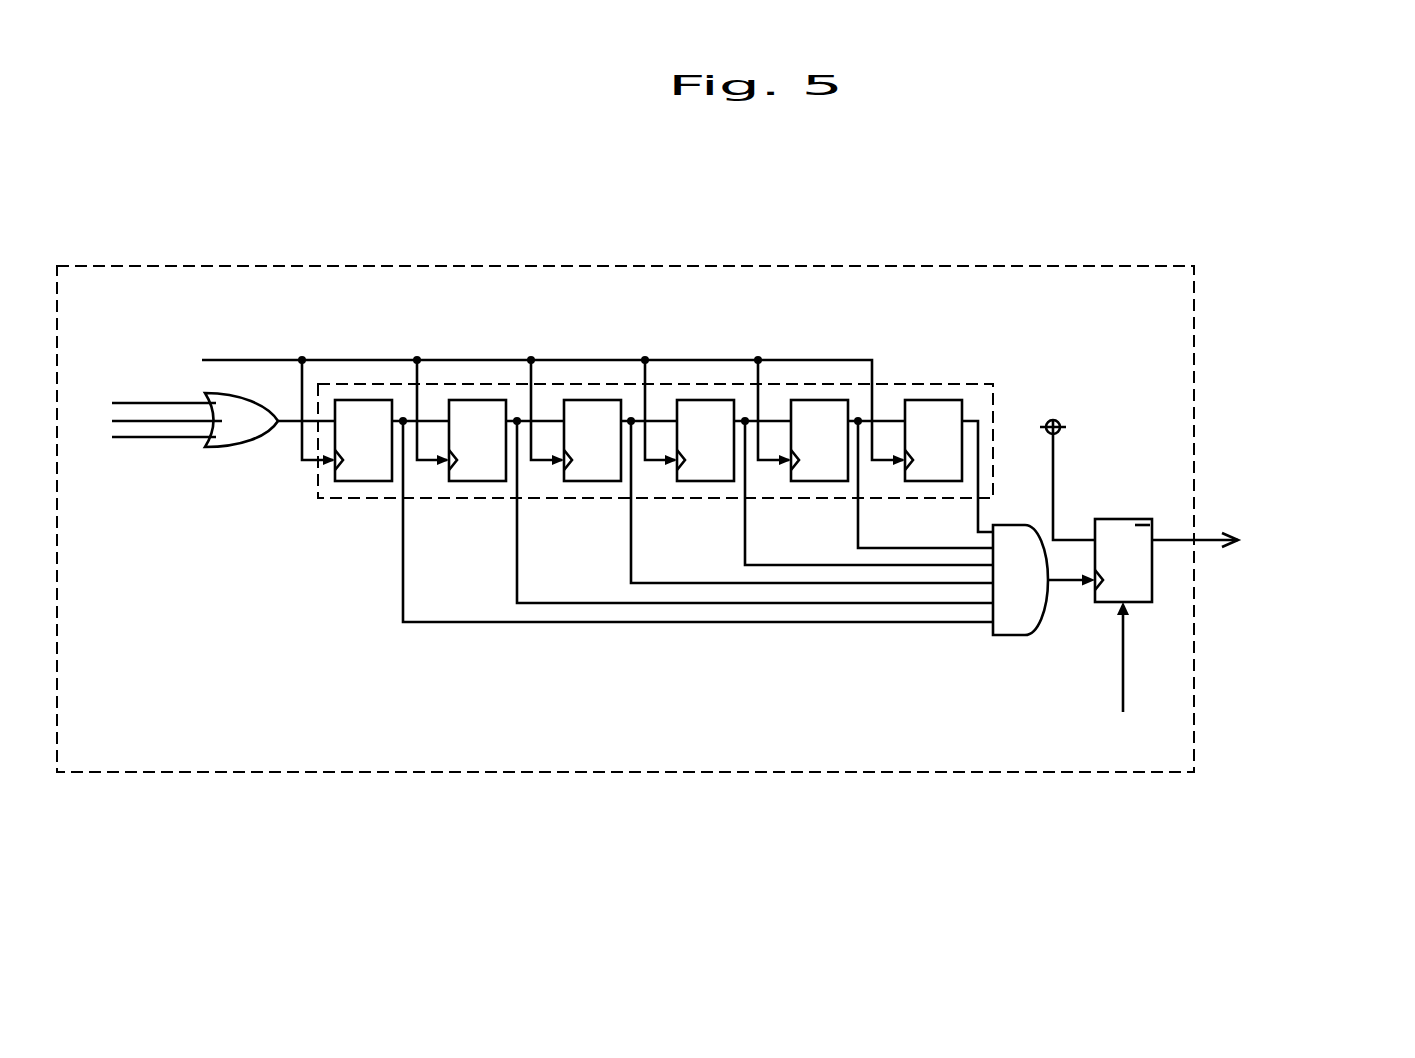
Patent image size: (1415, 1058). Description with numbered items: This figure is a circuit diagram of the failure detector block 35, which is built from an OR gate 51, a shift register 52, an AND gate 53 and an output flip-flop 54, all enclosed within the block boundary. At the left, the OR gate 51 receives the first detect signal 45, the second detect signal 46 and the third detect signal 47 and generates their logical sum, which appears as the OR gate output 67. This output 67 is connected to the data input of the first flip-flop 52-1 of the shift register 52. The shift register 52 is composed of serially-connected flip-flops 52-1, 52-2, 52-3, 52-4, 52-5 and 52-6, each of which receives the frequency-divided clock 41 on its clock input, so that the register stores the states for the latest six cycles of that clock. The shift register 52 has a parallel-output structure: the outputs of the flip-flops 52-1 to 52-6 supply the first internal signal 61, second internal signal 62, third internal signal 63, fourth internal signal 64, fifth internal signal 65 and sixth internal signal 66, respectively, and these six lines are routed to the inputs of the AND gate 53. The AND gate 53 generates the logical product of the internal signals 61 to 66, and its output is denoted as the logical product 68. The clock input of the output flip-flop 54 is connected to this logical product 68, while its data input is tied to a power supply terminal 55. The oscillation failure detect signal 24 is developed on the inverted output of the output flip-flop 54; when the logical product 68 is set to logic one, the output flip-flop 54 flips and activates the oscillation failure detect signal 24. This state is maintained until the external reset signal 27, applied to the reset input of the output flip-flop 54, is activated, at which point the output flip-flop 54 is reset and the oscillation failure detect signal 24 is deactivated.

The failure detector block 35 is at (830, 266).
The frequency-divided clock 41 is at (380, 360).
The first detect signal 45 is at (148, 403).
The second detect signal 46 is at (128, 421).
The third detect signal 47 is at (178, 437).
The OR gate 51 is at (232, 447).
The output of the OR gate 67 is at (288, 423).
The shift register 52 is at (948, 384).
The flip-flop 52-1 is at (367, 482).
The flip-flop 52-2 is at (482, 482).
The flip-flop 52-3 is at (597, 482).
The flip-flop 52-4 is at (710, 482).
The flip-flop 52-5 is at (823, 482).
The flip-flop 52-6 is at (938, 482).
The first internal signal 61 is at (440, 625).
The second internal signal 62 is at (528, 605).
The third internal signal 63 is at (738, 587).
The fourth internal signal 64 is at (807, 570).
The fifth internal signal 65 is at (877, 550).
The sixth internal signal 66 is at (988, 528).
The AND gate 53 is at (1013, 636).
The output of the AND gate 68 is at (1060, 586).
The power supply terminal 55 is at (1053, 420).
The output flip-flop 54 is at (1152, 580).
The external reset signal 27 is at (1123, 690).
The oscillation failure detect signal 24 is at (1200, 540).